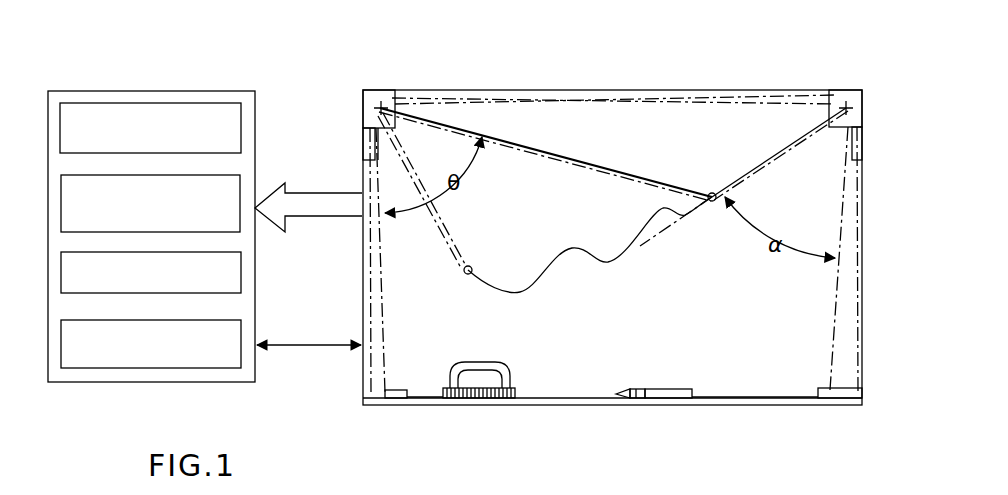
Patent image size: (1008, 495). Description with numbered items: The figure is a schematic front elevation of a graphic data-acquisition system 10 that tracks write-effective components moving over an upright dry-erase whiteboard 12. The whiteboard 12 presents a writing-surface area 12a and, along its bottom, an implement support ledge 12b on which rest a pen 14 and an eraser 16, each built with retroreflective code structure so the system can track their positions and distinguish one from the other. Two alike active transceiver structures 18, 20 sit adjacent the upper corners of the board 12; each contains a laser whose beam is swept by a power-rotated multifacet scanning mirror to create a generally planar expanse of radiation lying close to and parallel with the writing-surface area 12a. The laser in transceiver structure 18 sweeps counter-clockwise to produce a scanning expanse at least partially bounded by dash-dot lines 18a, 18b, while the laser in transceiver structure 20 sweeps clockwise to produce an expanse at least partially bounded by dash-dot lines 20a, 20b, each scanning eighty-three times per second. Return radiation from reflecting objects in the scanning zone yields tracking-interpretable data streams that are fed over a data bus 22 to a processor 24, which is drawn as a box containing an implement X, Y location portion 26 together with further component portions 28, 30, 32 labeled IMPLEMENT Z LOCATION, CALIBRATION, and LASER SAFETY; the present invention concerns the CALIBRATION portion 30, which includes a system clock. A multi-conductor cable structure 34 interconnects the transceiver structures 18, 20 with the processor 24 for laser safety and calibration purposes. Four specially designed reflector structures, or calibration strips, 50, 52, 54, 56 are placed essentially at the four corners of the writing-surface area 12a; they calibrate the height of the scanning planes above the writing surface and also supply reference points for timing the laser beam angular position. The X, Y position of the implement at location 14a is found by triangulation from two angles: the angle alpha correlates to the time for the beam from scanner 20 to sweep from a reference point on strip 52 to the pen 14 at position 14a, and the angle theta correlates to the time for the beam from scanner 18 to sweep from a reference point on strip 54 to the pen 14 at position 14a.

The graphic data-acquisition system 10 is at (393, 52).
The whiteboard 12 is at (562, 378).
The writing-surface area 12a is at (390, 385).
The implement support ledge 12b is at (784, 368).
The pen 14 is at (472, 269).
The implement position 14a is at (712, 204).
The eraser 16 is at (505, 372).
The transceiver structure 18 is at (375, 96).
The dash-dot line 18a is at (545, 102).
The dash-dot line 18b is at (430, 291).
The transceiver structure 20 is at (855, 98).
The dash-dot line 20a is at (832, 330).
The dash-dot line 20b is at (720, 104).
The data bus 22 is at (332, 192).
The processor 24 is at (187, 88).
The implement XY location module 26 is at (60, 142).
The IMPLEMENT Z LOCATION component portion 28 is at (61, 200).
The CALIBRATION component portion 30 is at (61, 282).
The LASER SAFETY component portion 32 is at (61, 354).
The multi-conductor cable structure 34 is at (322, 346).
The reflector structure 50 is at (862, 142).
The reflector structure 52 is at (853, 395).
The reflector structure 54 is at (387, 399).
The reflector structure 56 is at (372, 147).